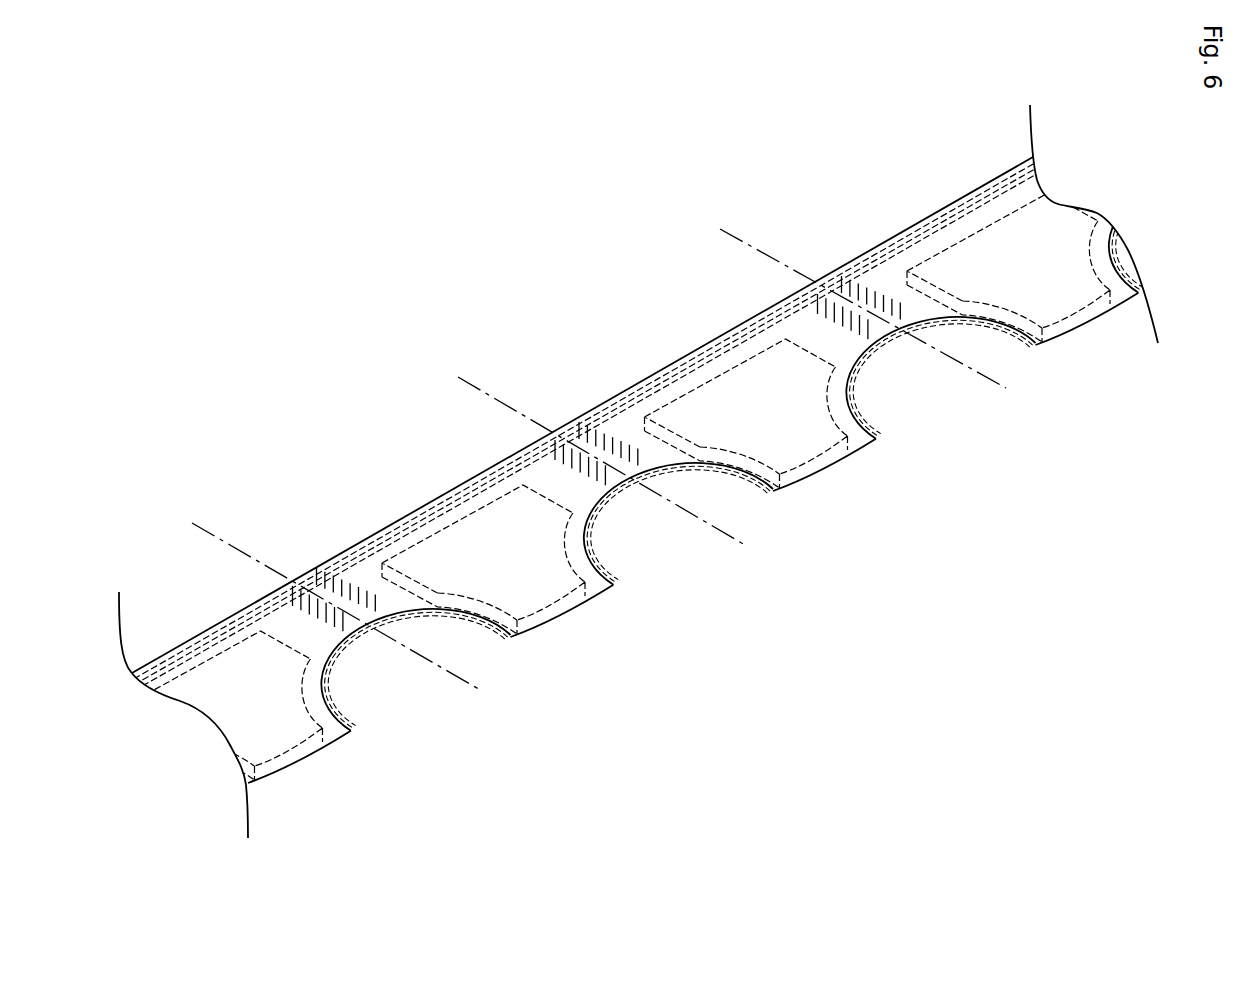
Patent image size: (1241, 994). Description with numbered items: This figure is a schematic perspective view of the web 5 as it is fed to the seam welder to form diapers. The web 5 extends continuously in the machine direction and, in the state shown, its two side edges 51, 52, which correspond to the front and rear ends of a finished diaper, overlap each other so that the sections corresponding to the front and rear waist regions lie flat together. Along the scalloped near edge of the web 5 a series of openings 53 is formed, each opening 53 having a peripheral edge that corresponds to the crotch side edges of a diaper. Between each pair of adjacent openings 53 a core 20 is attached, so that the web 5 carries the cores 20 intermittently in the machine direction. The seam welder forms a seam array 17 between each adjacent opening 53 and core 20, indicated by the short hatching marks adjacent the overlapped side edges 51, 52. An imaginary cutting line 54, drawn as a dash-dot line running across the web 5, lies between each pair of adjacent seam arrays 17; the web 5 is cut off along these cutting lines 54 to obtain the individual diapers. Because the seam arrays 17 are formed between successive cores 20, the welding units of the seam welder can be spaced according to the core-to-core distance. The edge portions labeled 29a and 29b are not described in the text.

The web 5 is at (943, 167).
The seam array 17 is at (338, 591).
The core 20 is at (542, 597).
The first edge portion 29a is at (447, 502).
The second edge portion 29b is at (557, 503).
The side edge 51 is at (720, 341).
The side edge 52 is at (688, 359).
The opening 53 is at (452, 613).
The imaginary cutting line 54 is at (192, 523).